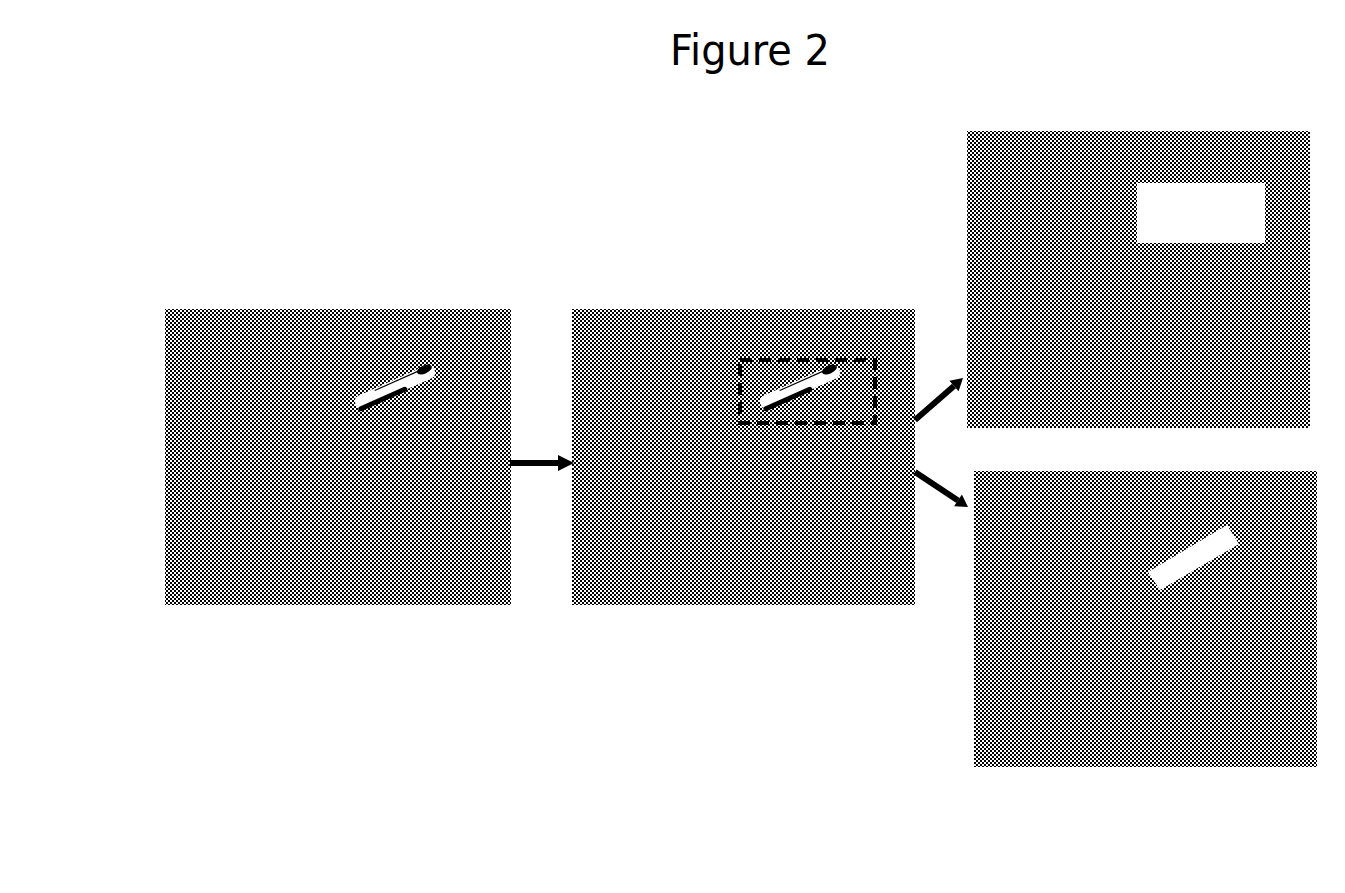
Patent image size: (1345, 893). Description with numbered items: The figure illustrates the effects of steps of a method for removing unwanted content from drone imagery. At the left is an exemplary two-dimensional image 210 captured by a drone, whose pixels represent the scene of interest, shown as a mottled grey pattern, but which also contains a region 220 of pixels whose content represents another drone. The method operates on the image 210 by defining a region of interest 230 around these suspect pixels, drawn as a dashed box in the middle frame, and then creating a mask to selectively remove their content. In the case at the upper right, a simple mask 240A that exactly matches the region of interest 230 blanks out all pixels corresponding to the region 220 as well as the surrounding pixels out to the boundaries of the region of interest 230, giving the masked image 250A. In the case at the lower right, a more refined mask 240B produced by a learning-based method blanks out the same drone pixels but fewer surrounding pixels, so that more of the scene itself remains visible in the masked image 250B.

The two-dimensional image 210 is at (166, 405).
The region of pixels 220 is at (397, 362).
The region of interest 230 is at (775, 358).
The mask 240A is at (1182, 213).
The refined mask 240B is at (1155, 565).
The masked image 250A is at (967, 158).
The masked image 250B is at (975, 720).